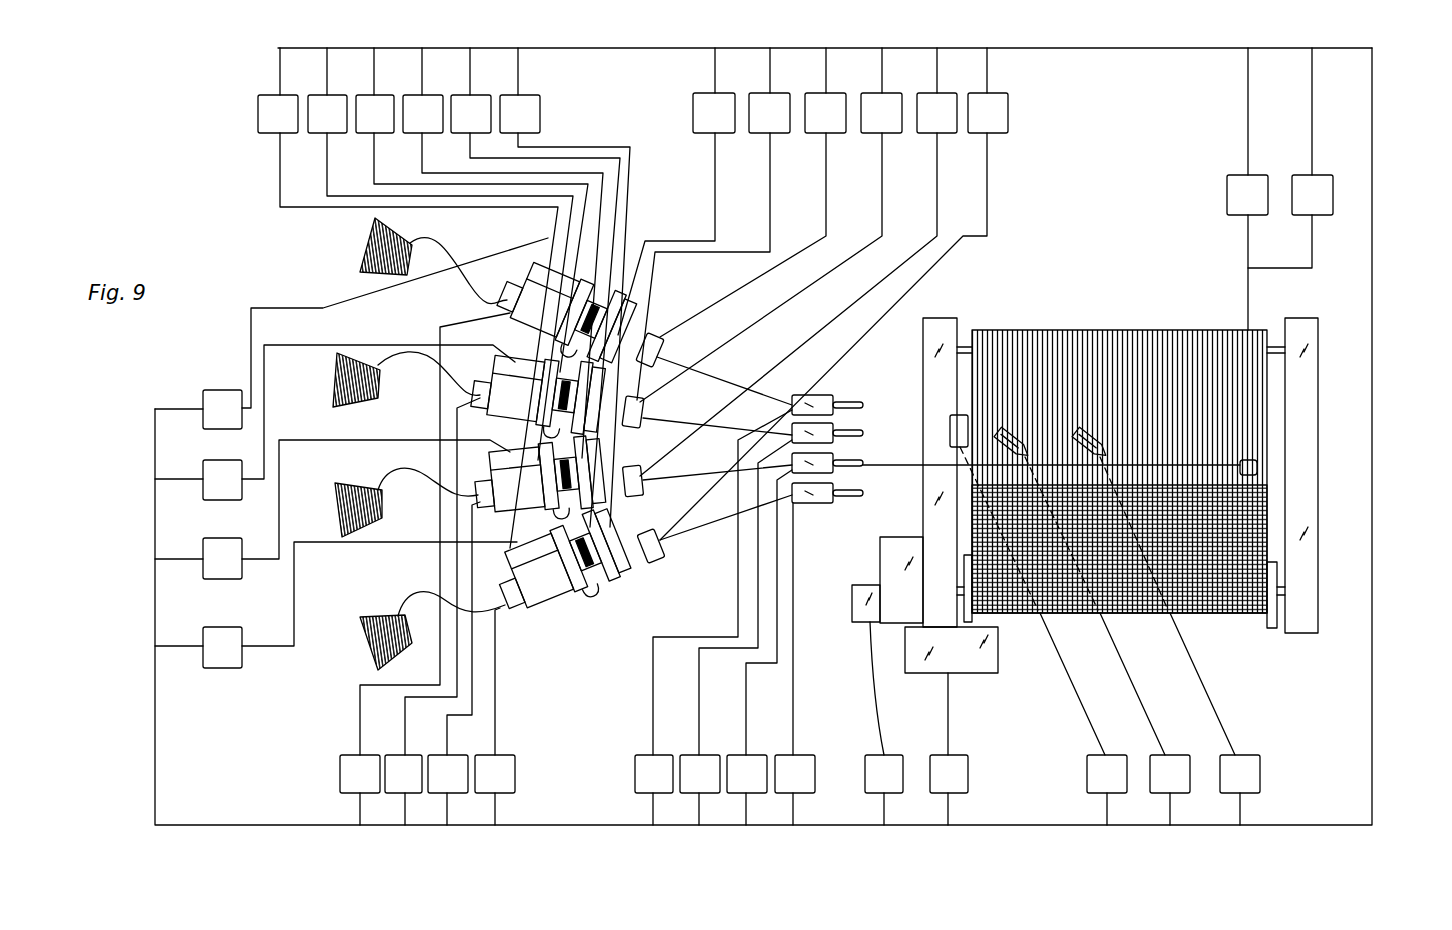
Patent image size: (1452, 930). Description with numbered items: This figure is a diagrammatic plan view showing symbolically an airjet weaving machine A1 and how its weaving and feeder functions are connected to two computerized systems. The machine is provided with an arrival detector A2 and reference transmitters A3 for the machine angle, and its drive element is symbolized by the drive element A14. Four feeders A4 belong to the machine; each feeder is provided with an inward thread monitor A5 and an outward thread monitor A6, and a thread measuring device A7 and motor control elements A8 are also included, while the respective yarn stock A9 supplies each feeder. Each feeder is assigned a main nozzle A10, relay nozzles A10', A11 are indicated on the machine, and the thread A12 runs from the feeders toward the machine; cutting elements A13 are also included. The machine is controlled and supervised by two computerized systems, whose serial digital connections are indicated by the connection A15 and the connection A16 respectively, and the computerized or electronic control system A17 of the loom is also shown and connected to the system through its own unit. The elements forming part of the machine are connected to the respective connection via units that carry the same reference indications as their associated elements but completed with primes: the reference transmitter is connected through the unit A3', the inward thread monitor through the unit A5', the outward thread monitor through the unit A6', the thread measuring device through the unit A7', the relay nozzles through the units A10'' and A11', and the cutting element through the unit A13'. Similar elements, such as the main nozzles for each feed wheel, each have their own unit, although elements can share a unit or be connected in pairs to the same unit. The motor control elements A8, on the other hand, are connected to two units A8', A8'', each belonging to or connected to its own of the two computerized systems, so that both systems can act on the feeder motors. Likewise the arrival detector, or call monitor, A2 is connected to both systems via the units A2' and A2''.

The airjet weaving machine A1 is at (1098, 313).
The arrival detector A2 is at (1224, 451).
The arrival detector unit A2' is at (1324, 221).
The arrival detector unit A2'' is at (1213, 195).
The reference transmitter A3 is at (851, 627).
The reference transmitter unit A3' is at (897, 758).
The feeder A4 is at (533, 610).
The inward thread monitor A5 is at (514, 620).
The inward thread monitor unit A5' is at (460, 774).
The outward thread monitor A6 is at (659, 572).
The outward thread monitor unit A6' is at (1016, 113).
The thread measuring device A7 is at (607, 579).
The thread measuring device unit A7' is at (825, 135).
The motor control element A8 is at (499, 569).
The motor control element unit A8' is at (245, 545).
The motor control element unit A8'' is at (399, 136).
The yarn stock A9 is at (362, 640).
The main nozzle A10 is at (914, 480).
The relay nozzle A10' is at (744, 758).
The relay nozzle unit A10'' is at (1181, 754).
The relay nozzle A11 is at (1101, 426).
The relay nozzle unit A11' is at (1263, 754).
The thread A12 is at (698, 530).
The cutting element A13 is at (918, 405).
The cutting element unit A13' is at (1068, 786).
The drive element A14 is at (903, 543).
The serial digital connection A15 is at (190, 824).
The serial digital connection A16 is at (628, 48).
The electronic control system A17 is at (979, 666).